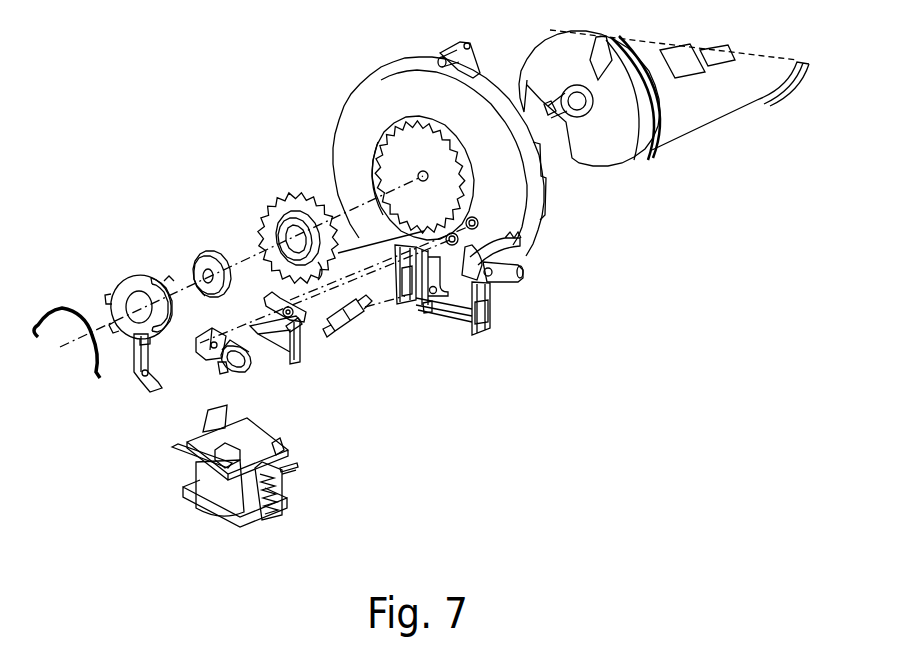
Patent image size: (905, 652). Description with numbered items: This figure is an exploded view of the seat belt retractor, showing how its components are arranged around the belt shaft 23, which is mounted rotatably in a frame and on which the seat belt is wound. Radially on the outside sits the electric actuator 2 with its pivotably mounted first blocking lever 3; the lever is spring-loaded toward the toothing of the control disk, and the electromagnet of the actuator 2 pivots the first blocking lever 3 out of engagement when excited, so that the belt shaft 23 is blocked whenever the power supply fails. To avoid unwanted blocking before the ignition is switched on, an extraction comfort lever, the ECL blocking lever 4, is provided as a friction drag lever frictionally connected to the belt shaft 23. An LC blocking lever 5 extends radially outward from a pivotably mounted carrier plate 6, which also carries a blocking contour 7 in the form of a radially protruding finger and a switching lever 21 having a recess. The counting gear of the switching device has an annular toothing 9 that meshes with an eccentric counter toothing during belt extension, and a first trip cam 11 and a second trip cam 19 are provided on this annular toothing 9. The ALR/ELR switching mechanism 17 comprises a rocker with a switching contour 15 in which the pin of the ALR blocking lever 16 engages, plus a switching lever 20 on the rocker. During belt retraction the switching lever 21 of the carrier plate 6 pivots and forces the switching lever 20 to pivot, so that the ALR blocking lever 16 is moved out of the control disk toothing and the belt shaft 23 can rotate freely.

The electric actuator 2 is at (197, 473).
The first blocking lever 3 is at (245, 440).
The ECL blocking lever 4 is at (135, 378).
The LC blocking lever 5 is at (291, 362).
The carrier plate 6 is at (288, 330).
The blocking contour 7 is at (265, 335).
The annular toothing 9 is at (262, 222).
The first trip cam 11 is at (298, 283).
The switching contour 15 is at (233, 378).
The ALR blocking lever 16 is at (355, 330).
The ALR/ELR switching mechanism 17 is at (222, 370).
The second trip cam 19 is at (292, 191).
The switching lever 20 is at (201, 343).
The switching lever 21 is at (263, 305).
The belt shaft 23 is at (592, 157).